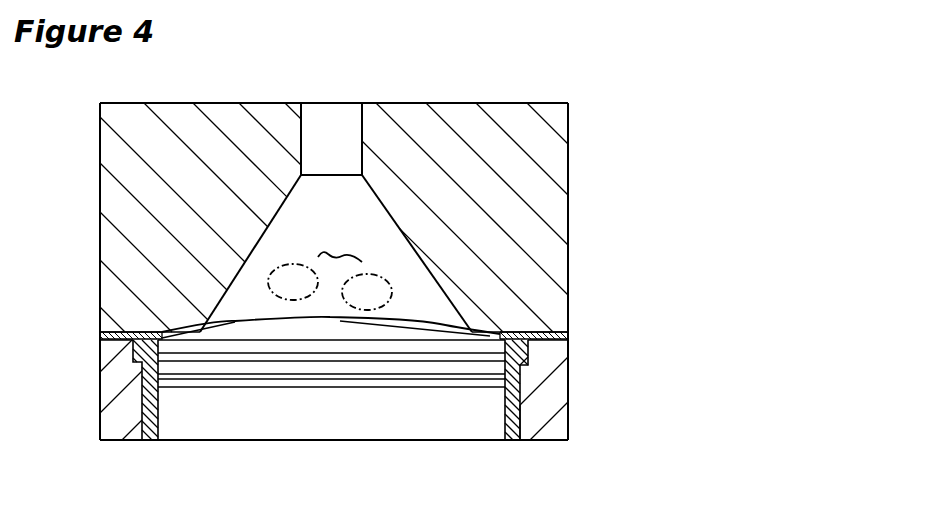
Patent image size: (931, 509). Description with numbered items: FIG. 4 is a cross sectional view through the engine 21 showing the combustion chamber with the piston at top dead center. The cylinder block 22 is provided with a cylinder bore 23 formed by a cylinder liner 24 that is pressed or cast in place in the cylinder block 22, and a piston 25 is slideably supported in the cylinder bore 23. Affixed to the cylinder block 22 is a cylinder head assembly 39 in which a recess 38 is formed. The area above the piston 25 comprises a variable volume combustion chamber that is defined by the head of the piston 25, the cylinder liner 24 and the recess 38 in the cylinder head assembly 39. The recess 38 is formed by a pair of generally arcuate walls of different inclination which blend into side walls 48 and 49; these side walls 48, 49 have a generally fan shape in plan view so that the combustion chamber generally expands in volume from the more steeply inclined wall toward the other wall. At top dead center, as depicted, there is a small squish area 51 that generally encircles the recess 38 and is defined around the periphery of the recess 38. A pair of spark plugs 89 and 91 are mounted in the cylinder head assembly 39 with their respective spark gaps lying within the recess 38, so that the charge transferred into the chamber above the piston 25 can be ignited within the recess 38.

The engine 21 is at (652, 231).
The cylinder head assembly 39 is at (568, 120).
The side wall 49 is at (258, 236).
The side wall 48 is at (400, 237).
The recess 38 is at (340, 245).
The spark plug 89 is at (272, 290).
The spark plug 91 is at (343, 292).
The squish area 51 is at (478, 327).
The piston 25 is at (193, 418).
The cylinder block 22 is at (555, 388).
The cylinder bore 23 is at (503, 412).
The cylinder liner 24 is at (520, 428).